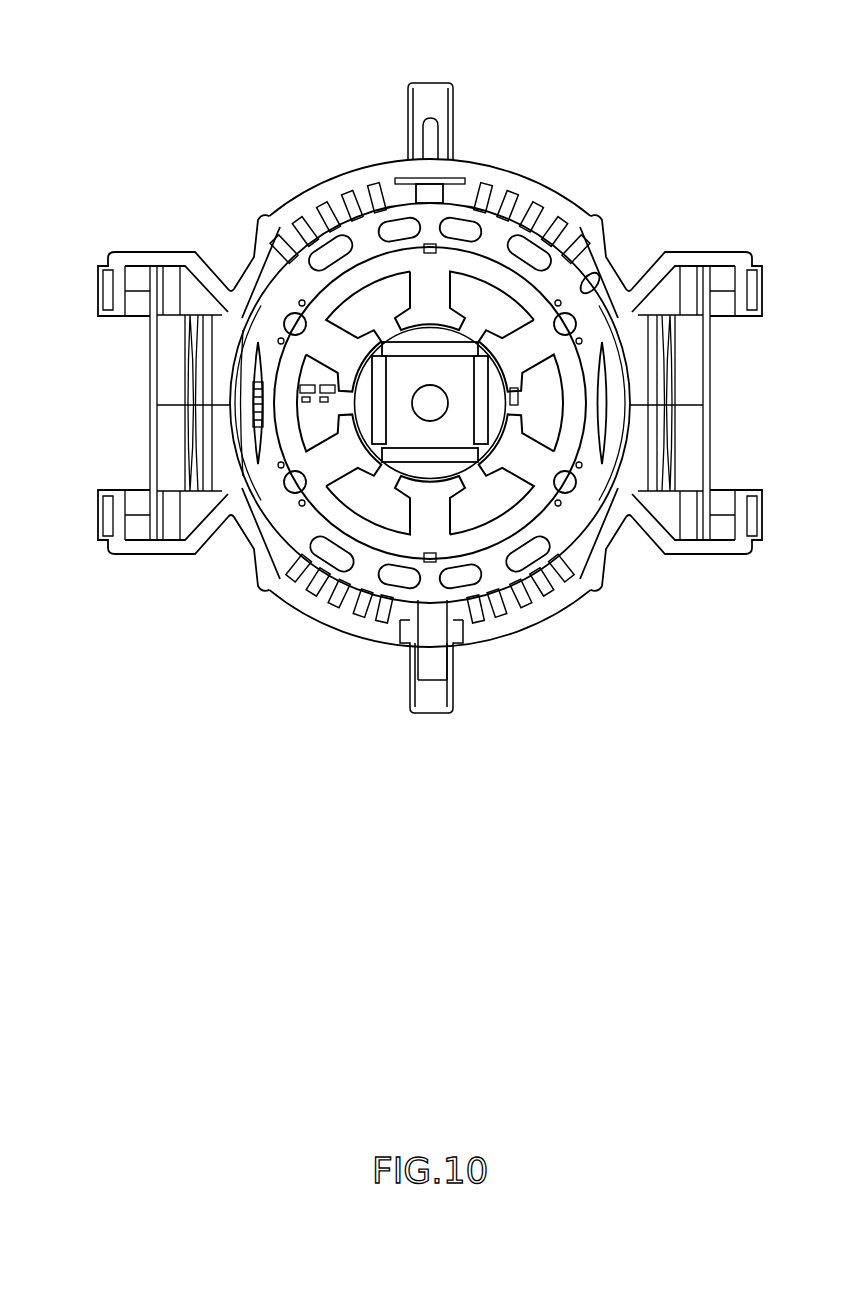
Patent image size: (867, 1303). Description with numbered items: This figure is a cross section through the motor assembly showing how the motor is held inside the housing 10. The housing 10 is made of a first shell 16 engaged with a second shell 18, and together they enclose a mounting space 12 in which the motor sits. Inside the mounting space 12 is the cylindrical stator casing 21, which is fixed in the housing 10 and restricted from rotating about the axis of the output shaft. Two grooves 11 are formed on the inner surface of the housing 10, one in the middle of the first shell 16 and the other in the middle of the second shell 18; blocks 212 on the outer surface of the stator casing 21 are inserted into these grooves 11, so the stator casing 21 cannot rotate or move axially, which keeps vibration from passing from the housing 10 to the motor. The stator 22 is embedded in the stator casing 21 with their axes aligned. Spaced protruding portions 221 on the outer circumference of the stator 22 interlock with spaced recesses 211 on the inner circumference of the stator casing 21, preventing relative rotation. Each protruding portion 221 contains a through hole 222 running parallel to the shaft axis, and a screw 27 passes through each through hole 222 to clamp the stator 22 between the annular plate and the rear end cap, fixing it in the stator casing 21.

The housing 10 is at (274, 213).
The grooves 11 is at (462, 180).
The mounting space 12 is at (610, 263).
The first shell 16 is at (541, 182).
The second shell 18 is at (552, 618).
The stator casing 21 is at (380, 575).
The recesses 211 is at (320, 552).
The blocks 212 is at (405, 185).
The stator 22 is at (290, 410).
The protruding portions 221 is at (237, 525).
The through hole 222 is at (255, 530).
The screw 27 is at (262, 447).